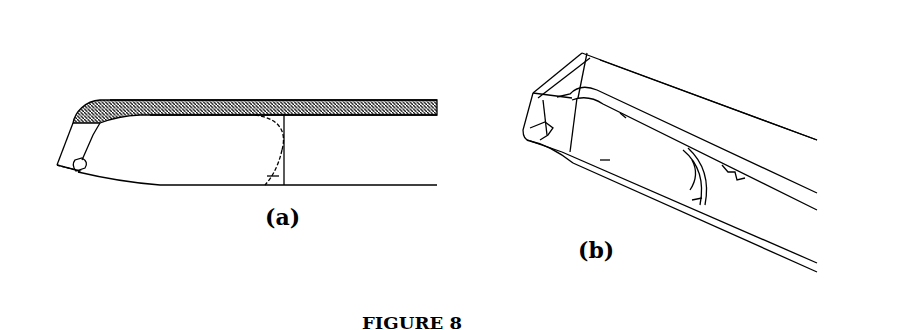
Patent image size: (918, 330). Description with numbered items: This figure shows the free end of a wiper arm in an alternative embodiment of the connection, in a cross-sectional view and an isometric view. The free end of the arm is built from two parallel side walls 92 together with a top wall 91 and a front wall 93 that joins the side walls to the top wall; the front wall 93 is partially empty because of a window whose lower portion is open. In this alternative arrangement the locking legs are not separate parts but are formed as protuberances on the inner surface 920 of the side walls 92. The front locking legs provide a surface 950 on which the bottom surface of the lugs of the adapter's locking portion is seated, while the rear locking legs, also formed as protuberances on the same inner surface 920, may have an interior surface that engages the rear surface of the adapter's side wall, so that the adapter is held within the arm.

The top wall 91 is at (137, 102).
The side walls 92 is at (177, 134).
The front wall 93 is at (82, 115).
The surface 950 is at (83, 163).
The inner surface 920 is at (610, 160).